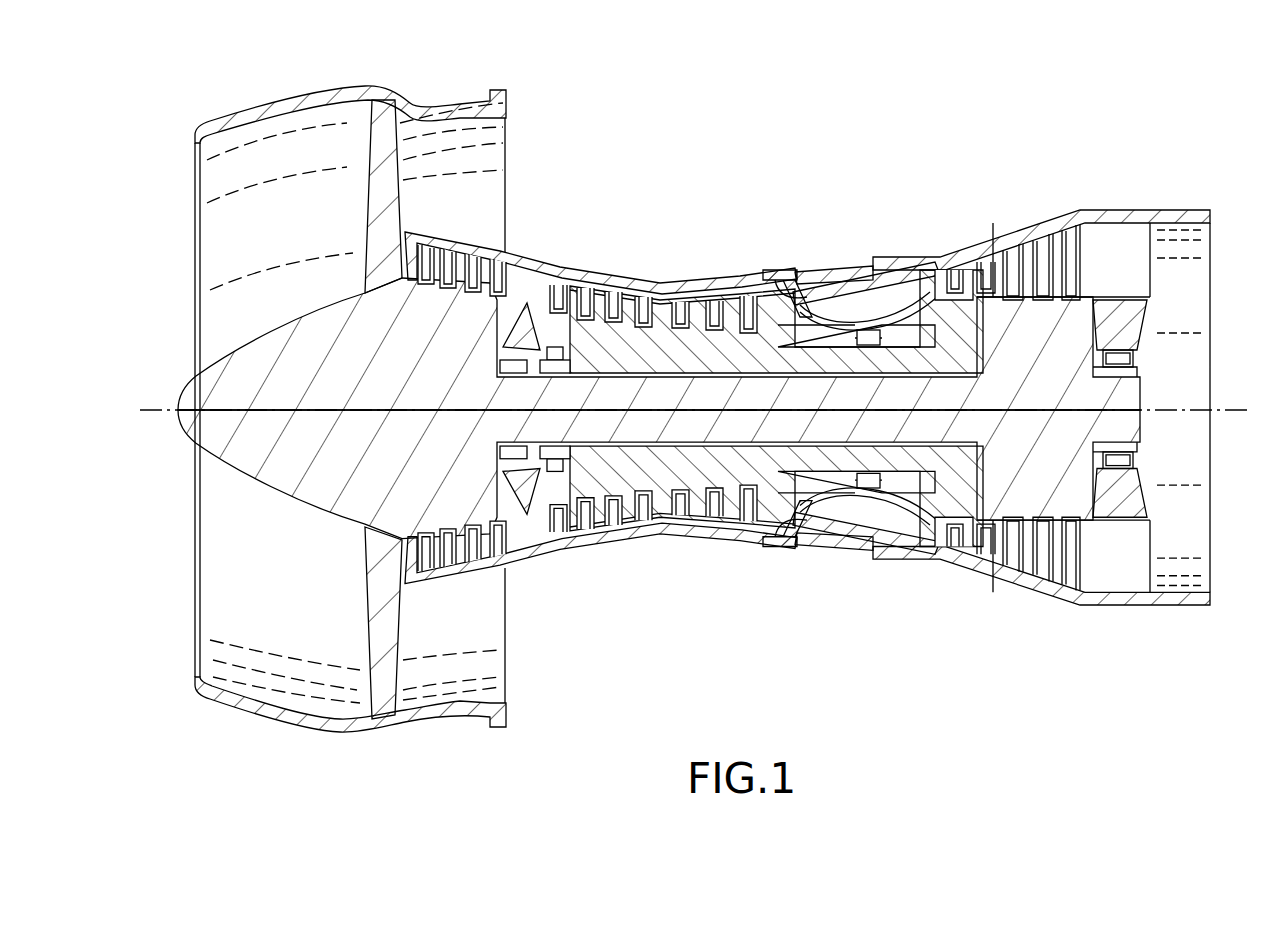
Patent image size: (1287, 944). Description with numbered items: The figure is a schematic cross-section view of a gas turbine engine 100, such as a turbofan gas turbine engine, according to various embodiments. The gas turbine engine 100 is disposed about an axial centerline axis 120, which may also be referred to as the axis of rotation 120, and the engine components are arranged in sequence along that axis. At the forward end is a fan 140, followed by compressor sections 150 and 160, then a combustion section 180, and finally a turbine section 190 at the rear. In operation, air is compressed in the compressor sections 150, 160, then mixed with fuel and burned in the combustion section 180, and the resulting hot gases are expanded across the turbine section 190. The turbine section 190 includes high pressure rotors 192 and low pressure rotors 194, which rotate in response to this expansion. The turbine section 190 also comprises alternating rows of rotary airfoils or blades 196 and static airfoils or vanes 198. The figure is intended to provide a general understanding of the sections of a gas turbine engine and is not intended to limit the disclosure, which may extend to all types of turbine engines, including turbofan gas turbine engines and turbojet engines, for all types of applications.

The gas turbine engine 100 is at (693, 416).
The axial centerline axis 120 is at (158, 408).
The fan 140 is at (397, 157).
The compressor section 150 is at (490, 742).
The compressor section 160 is at (763, 557).
The combustion section 180 is at (950, 575).
The turbine section 190 is at (1041, 417).
The high pressure rotors 192 is at (967, 283).
The low pressure rotors 194 is at (1082, 320).
The rotary airfoils or blades 196 is at (1020, 245).
The static airfoils or vanes 198 is at (1040, 240).